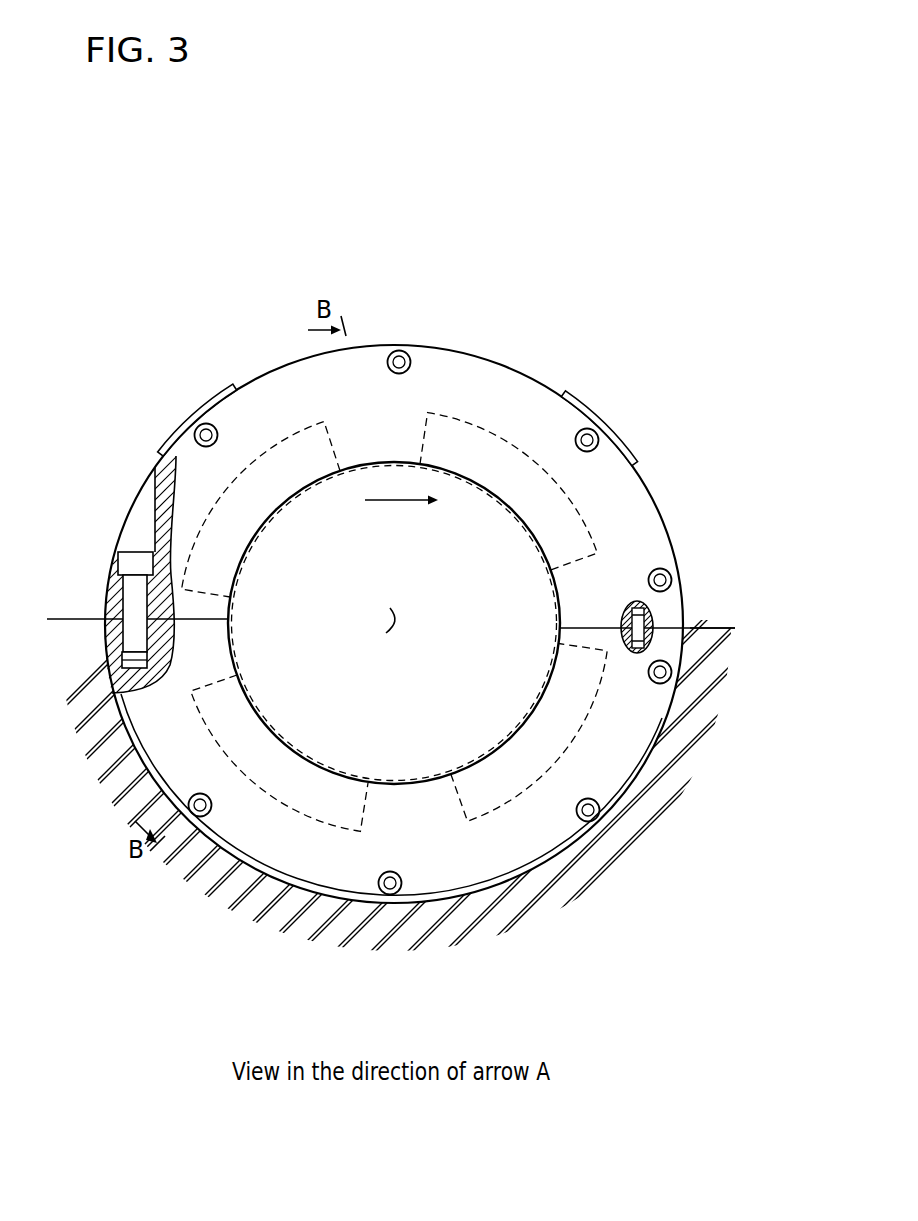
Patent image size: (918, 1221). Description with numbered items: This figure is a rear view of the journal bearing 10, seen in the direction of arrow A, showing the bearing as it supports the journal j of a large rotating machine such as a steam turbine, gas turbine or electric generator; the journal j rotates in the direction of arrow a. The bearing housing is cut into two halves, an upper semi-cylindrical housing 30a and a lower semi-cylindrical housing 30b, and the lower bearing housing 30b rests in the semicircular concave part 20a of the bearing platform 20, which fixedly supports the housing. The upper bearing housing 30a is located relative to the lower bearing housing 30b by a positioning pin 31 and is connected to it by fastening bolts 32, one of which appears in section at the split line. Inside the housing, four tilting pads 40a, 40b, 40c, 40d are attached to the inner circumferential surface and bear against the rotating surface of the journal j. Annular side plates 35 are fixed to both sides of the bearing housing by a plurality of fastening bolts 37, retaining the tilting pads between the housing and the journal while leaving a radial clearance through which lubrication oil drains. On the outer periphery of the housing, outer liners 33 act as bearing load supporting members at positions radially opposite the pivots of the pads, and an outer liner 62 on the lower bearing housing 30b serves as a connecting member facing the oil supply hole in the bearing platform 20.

The journal bearing 10 is at (275, 288).
The bearing platform 20 is at (686, 725).
The concave part 20a is at (676, 683).
The upper semi-cylindrical housing 30a is at (263, 373).
The lower semi-cylindrical housing 30b is at (470, 880).
The positioning pin 31 is at (620, 600).
The fastening bolt 32 is at (108, 610).
The outer liner 33 is at (190, 412).
The annular side plate 35 is at (512, 381).
The fastening bolt 37 is at (410, 351).
The tilting pad 40a is at (245, 547).
The tilting pad 40b is at (522, 508).
The tilting pad 40c is at (506, 748).
The tilting pad 40d is at (252, 712).
The outer liner 62 is at (652, 757).
The direction of rotation a is at (378, 500).
The journal j is at (380, 655).